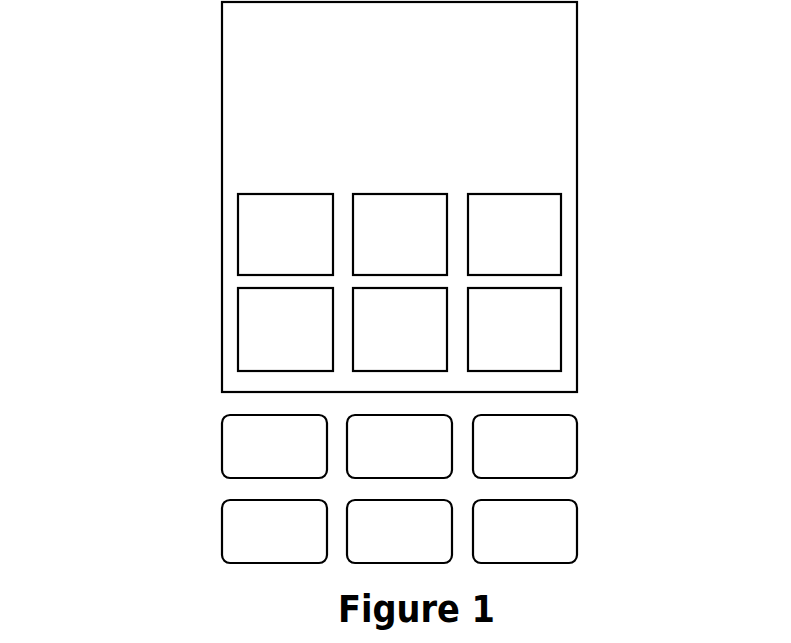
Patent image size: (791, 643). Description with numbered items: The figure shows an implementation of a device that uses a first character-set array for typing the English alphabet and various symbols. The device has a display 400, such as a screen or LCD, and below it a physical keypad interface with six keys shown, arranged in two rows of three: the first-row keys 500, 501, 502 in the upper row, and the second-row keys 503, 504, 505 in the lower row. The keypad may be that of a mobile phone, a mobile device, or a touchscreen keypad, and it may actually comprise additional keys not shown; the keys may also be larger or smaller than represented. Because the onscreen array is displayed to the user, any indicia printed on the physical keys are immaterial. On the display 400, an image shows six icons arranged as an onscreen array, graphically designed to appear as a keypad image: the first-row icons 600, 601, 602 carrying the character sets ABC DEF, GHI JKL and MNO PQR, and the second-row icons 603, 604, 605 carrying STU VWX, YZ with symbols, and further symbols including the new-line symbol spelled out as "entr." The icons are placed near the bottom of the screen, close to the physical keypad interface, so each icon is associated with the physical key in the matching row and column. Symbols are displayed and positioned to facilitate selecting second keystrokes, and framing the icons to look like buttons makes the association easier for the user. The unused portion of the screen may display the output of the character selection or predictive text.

The display screen 400 is at (577, 77).
The key(1,1) 500 is at (223, 447).
The key(1,2) 501 is at (346, 462).
The key(1,3) 502 is at (577, 461).
The key(2,1) 503 is at (222, 532).
The key(2,2) 504 is at (347, 533).
The key(2,3) 505 is at (577, 535).
The {CHAR}(1,1) 600 is at (238, 211).
The {CHAR}(1,2) 601 is at (352, 193).
The {CHAR}(1,3) 602 is at (560, 194).
The {CHAR}(2,1) 603 is at (240, 342).
The {CHAR}(2,2) 604 is at (447, 371).
The {CHAR}(2,3) 605 is at (561, 326).